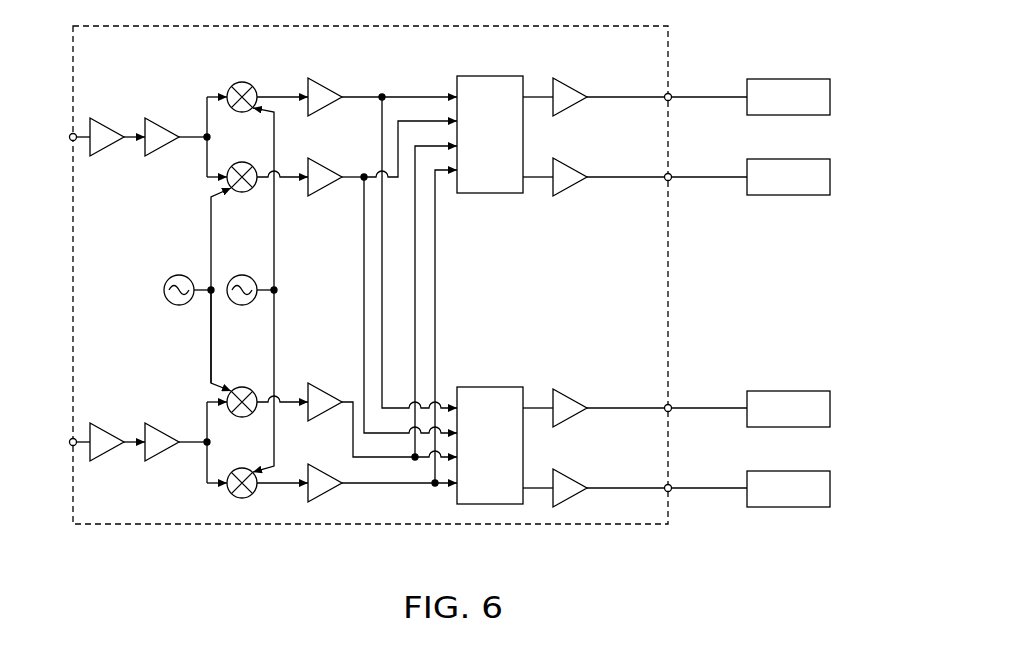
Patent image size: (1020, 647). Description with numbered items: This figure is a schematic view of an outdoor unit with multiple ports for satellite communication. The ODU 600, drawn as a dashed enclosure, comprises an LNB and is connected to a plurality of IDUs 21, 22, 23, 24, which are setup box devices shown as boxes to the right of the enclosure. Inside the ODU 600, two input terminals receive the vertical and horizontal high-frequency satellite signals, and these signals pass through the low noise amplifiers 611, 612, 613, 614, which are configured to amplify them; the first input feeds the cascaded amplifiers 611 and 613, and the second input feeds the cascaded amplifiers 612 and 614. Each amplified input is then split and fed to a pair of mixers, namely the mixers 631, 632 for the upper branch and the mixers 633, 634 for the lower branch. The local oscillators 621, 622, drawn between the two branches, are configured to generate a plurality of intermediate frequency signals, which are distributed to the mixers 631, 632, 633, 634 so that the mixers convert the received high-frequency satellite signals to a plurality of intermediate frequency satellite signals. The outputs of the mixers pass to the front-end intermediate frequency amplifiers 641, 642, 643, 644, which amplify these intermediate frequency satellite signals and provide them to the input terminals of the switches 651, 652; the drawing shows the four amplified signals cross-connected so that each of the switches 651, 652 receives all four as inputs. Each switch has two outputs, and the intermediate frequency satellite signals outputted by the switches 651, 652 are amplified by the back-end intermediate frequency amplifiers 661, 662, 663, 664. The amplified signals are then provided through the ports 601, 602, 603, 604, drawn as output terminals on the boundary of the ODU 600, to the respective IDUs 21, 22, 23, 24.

The ODU 600 is at (625, 528).
The low noise amplifier 611 is at (110, 118).
The low noise amplifier 612 is at (110, 423).
The low noise amplifier 613 is at (163, 118).
The low noise amplifier 614 is at (163, 423).
The local oscillator 621 is at (179, 275).
The local oscillator 622 is at (242, 275).
The mixer 631 is at (241, 81).
The mixer 632 is at (241, 161).
The mixer 633 is at (241, 386).
The mixer 634 is at (241, 467).
The front-end intermediate frequency amplifier 641 is at (325, 78).
The front-end intermediate frequency amplifier 642 is at (325, 158).
The front-end intermediate frequency amplifier 643 is at (325, 383).
The front-end intermediate frequency amplifier 644 is at (325, 464).
The switch 651 is at (490, 76).
The switch 652 is at (490, 387).
The back-end intermediate frequency amplifier 661 is at (572, 85).
The back-end intermediate frequency amplifier 662 is at (572, 162).
The back-end intermediate frequency amplifier 663 is at (572, 395).
The back-end intermediate frequency amplifier 664 is at (572, 475).
The port 601 is at (665, 100).
The port 602 is at (665, 174).
The port 603 is at (665, 411).
The port 604 is at (665, 486).
The IDU 21 is at (830, 97).
The IDU 22 is at (830, 177).
The IDU 23 is at (830, 408).
The IDU 24 is at (830, 488).